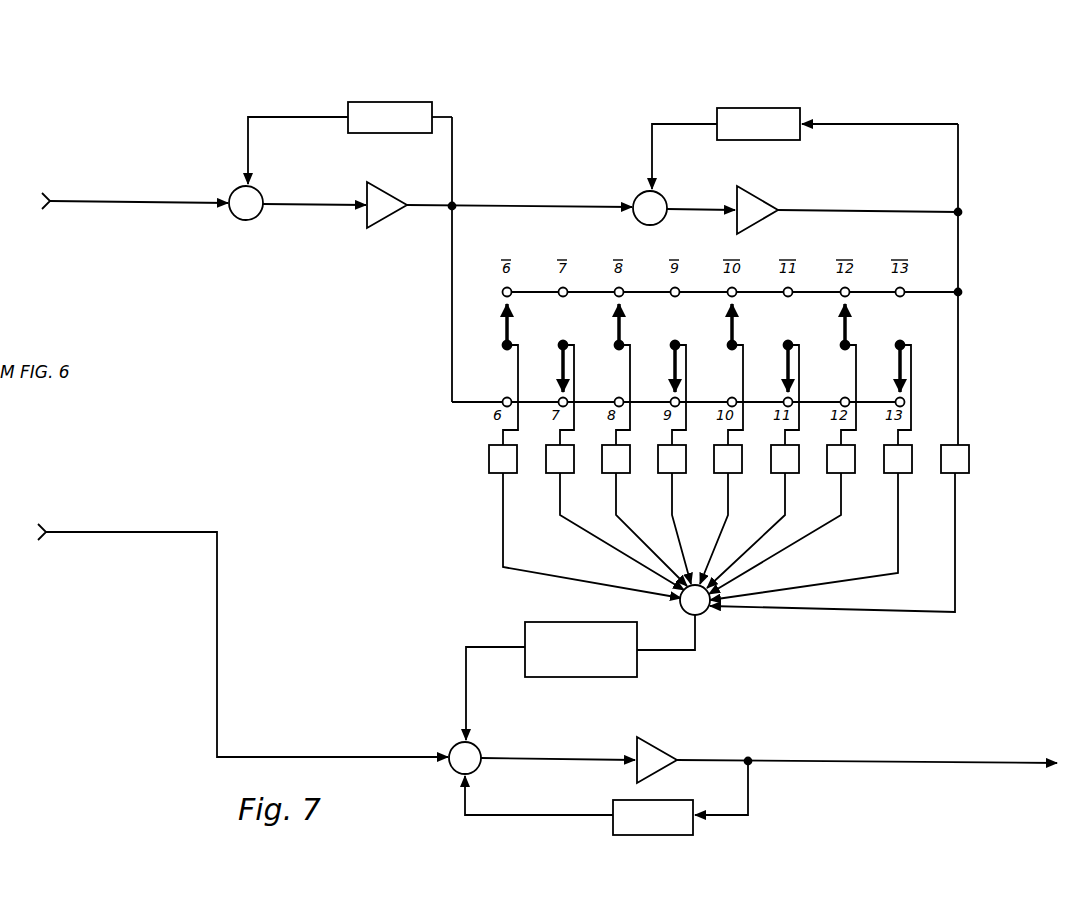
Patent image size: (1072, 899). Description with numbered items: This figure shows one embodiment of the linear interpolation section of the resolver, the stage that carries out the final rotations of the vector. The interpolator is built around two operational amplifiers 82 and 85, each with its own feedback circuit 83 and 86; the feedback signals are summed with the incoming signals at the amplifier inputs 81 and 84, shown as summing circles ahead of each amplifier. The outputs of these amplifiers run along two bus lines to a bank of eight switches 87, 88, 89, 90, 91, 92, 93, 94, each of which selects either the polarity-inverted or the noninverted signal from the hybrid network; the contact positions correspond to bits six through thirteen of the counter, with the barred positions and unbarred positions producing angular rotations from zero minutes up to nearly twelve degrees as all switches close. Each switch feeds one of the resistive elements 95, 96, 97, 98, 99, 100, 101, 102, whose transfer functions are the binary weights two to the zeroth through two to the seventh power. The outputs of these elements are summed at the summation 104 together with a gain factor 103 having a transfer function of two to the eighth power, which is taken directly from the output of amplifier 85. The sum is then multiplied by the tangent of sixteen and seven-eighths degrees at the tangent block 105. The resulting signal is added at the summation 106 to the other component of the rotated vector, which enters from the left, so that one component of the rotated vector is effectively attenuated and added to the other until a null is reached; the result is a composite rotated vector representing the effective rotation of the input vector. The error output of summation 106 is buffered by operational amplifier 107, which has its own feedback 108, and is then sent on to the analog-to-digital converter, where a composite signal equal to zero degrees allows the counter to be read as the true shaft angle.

The summing input 81 is at (241, 219).
The operational amplifier 82 is at (383, 224).
The feedback circuit 83 is at (385, 101).
The summing input 84 is at (662, 196).
The operational amplifier 85 is at (755, 195).
The feedback circuit 86 is at (760, 107).
The switch 87 is at (499, 374).
The switch 88 is at (560, 383).
The switch 89 is at (611, 374).
The switch 90 is at (673, 383).
The switch 91 is at (724, 374).
The switch 92 is at (786, 383).
The switch 93 is at (837, 374).
The switch 94 is at (898, 383).
The resistive element 95 is at (495, 474).
The resistive element 96 is at (552, 474).
The resistive element 97 is at (608, 474).
The resistive element 98 is at (664, 474).
The resistive element 99 is at (720, 474).
The resistive element 100 is at (777, 474).
The resistive element 101 is at (833, 474).
The resistive element 102 is at (890, 474).
The gain factor 103 is at (947, 474).
The summation 104 is at (706, 612).
The tangent multiplier 105 is at (637, 668).
The summation 106 is at (477, 746).
The operational amplifier 107 is at (655, 745).
The feedback 108 is at (668, 799).